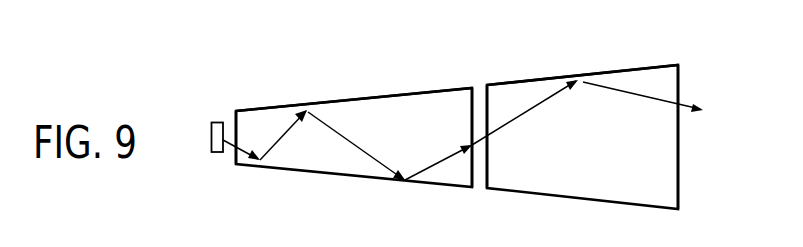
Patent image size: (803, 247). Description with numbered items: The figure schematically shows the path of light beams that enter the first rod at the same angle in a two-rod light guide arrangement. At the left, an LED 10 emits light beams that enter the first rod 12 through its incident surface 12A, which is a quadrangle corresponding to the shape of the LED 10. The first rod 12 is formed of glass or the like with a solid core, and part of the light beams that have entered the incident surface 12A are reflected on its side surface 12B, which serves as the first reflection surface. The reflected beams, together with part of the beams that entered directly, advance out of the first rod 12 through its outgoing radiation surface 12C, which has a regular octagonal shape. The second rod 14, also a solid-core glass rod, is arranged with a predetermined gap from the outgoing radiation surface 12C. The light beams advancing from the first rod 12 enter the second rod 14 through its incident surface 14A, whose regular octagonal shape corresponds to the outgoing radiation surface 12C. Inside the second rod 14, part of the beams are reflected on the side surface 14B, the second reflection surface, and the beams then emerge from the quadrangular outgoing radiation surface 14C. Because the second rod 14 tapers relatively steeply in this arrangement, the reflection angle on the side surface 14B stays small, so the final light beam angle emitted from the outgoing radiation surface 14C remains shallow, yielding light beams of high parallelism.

The LED 10 is at (213, 153).
The first rod 12 is at (318, 163).
The incident surface 12A is at (235, 123).
The side surface 12B is at (283, 105).
The outgoing radiation surface 12C is at (474, 86).
The second rod 14 is at (540, 189).
The incident surface 14A is at (484, 87).
The side surface 14B is at (602, 73).
The outgoing radiation surface 14C is at (679, 90).